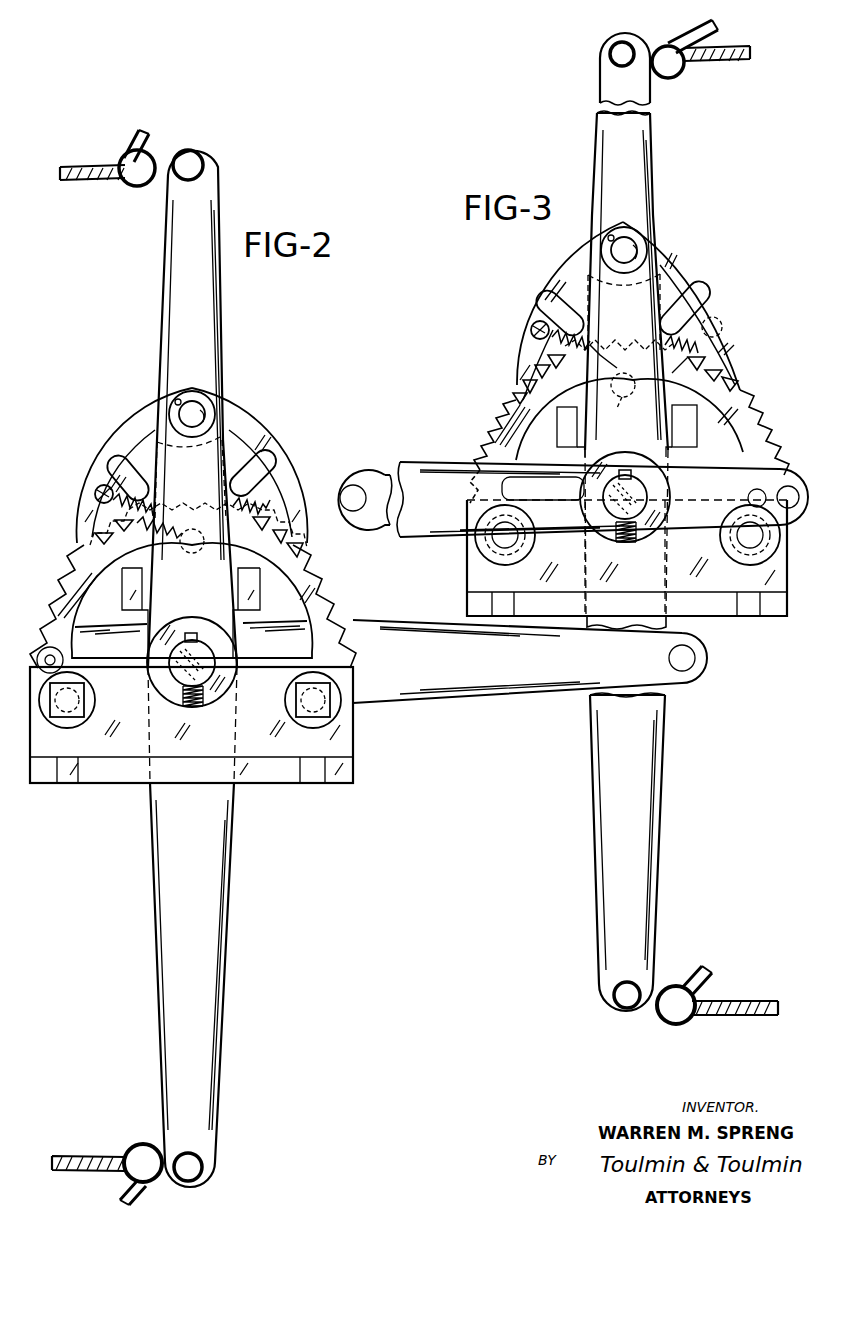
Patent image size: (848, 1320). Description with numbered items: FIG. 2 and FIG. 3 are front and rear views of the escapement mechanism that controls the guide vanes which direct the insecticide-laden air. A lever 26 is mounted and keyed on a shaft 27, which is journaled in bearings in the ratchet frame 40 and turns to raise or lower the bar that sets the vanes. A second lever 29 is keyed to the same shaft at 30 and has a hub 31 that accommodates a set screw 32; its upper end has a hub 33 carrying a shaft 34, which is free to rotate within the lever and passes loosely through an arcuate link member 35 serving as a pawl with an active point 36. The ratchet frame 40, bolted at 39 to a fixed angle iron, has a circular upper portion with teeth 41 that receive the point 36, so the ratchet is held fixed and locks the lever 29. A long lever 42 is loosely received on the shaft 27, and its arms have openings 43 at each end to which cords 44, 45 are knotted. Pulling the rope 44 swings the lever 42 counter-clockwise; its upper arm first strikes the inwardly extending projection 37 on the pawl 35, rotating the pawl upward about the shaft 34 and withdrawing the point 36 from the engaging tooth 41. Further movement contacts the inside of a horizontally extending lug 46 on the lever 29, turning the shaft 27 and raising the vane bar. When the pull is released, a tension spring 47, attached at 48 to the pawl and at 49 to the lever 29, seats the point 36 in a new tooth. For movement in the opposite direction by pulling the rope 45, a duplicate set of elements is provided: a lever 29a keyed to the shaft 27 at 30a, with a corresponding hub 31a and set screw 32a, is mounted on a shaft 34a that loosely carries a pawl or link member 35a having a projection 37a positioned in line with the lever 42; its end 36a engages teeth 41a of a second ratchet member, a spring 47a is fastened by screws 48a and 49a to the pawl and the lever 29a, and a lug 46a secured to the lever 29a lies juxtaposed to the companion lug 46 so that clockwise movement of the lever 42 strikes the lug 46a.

In FIG. 2, the lever 26 is at (490, 690).
In FIG. 3, the lever 26 is at (444, 466).
In FIG. 2, the shaft 27 is at (176, 666).
In FIG. 3, the shaft 27 is at (648, 500).
In FIG. 2, the second lever 29 is at (207, 481).
In FIG. 3, the lever 29a is at (641, 317).
In FIG. 2, the key 30 is at (190, 633).
In FIG. 3, the key 30a is at (624, 470).
In FIG. 2, the hub 31 is at (236, 655).
In FIG. 3, the hub 31a is at (670, 510).
In FIG. 2, the set screw 32 is at (206, 698).
In FIG. 3, the set screw 32a is at (626, 545).
In FIG. 2, the hub 33 is at (206, 397).
In FIG. 2, the shaft 34 is at (207, 414).
In FIG. 3, the shaft 34a is at (632, 244).
In FIG. 2, the link member 35 is at (135, 440).
In FIG. 3, the link member 35 is at (688, 284).
In FIG. 2, the pawl or link member 35a is at (256, 445).
In FIG. 3, the pawl or link member 35a is at (570, 280).
In FIG. 2, the active point 36 is at (82, 545).
In FIG. 3, the active point 36 is at (736, 378).
In FIG. 3, the end of the pawl 36a is at (523, 376).
In FIG. 2, the inwardly extending projection 37 is at (112, 464).
In FIG. 2, the inwardly extending projection 37a is at (276, 476).
In FIG. 3, the inwardly extending projection 37a is at (550, 300).
In FIG. 2, the bolts 39 is at (84, 715).
In FIG. 3, the bolts 39 is at (627, 535).
In FIG. 2, the ratchet frame 40 is at (342, 735).
In FIG. 3, the ratchet frame 40 is at (627, 558).
In FIG. 2, the teeth 41 is at (58, 594).
In FIG. 2, the teeth 41a is at (314, 566).
In FIG. 3, the teeth 41a is at (498, 404).
In FIG. 2, the long lever 42 is at (218, 335).
In FIG. 3, the long lever 42 is at (656, 835).
In FIG. 2, the openings 43 is at (204, 150).
In FIG. 3, the openings 43 is at (605, 62).
In FIG. 2, the cord 44 is at (93, 170).
In FIG. 3, the cord 44 is at (713, 66).
In FIG. 2, the cord 45 is at (79, 1154).
In FIG. 3, the cord 45 is at (734, 998).
In FIG. 2, the lug 46 is at (137, 609).
In FIG. 3, the lug 46 is at (697, 431).
In FIG. 2, the lug 46a is at (262, 596).
In FIG. 3, the lug 46a is at (562, 430).
In FIG. 2, the tension spring 47 is at (191, 524).
In FIG. 3, the spring 47a is at (592, 341).
In FIG. 2, the spring attachment point 48 is at (95, 490).
In FIG. 3, the screw 48a is at (534, 323).
In FIG. 2, the spring attachment point 49 is at (198, 547).
In FIG. 3, the screw 49a is at (632, 395).